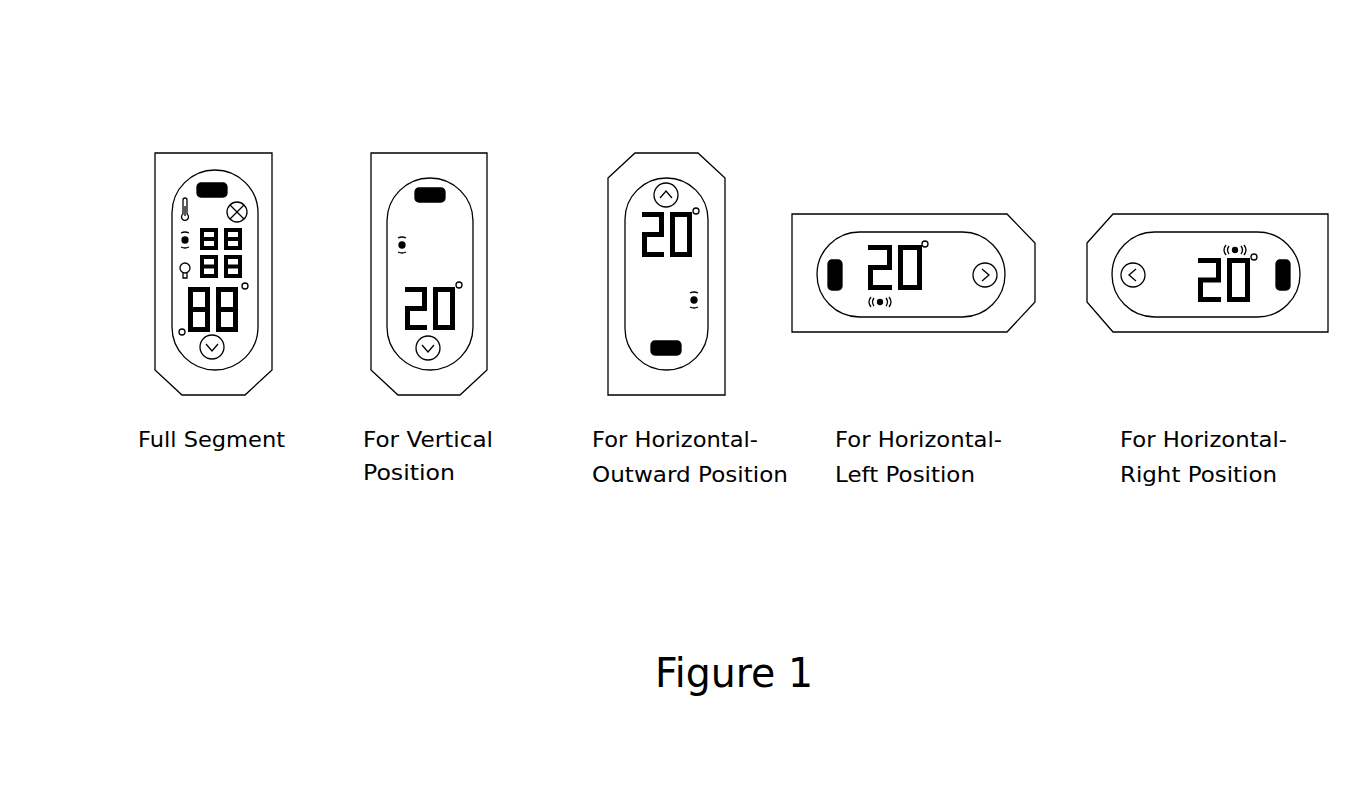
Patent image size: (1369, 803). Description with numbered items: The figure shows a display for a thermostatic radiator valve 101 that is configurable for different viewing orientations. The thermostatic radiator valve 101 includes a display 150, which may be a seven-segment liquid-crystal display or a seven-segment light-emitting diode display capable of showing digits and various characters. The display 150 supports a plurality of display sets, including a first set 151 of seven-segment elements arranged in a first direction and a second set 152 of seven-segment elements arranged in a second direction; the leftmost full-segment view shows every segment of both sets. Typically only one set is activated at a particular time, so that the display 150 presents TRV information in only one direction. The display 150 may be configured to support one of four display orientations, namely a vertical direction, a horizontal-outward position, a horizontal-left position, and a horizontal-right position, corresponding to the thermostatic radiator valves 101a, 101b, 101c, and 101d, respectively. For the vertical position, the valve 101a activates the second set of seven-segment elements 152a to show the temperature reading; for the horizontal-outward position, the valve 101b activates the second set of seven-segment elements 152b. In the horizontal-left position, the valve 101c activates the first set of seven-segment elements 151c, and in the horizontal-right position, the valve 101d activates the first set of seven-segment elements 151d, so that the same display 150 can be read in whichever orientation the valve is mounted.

The thermostatic radiator valve 101 is at (246, 219).
The thermostatic radiator valve in vertical orientation 101a is at (465, 219).
The thermostatic radiator valve in horizontal-outward orientation 101b is at (698, 219).
The thermostatic radiator valve in horizontal-left orientation 101c is at (913, 236).
The thermostatic radiator valve in horizontal-right orientation 101d is at (1207, 236).
The display 150 is at (250, 188).
The first set of seven-segment elements 151 is at (246, 243).
The second set of seven-segment elements 152 is at (247, 300).
The second set of seven-segment elements in vertical orientation 152a is at (462, 309).
The second set of seven-segment elements in horizontal-outward orientation 152b is at (715, 218).
The first set of seven-segment elements in horizontal-left orientation 151c is at (903, 288).
The first set of seven-segment elements in horizontal-right orientation 151d is at (1225, 301).